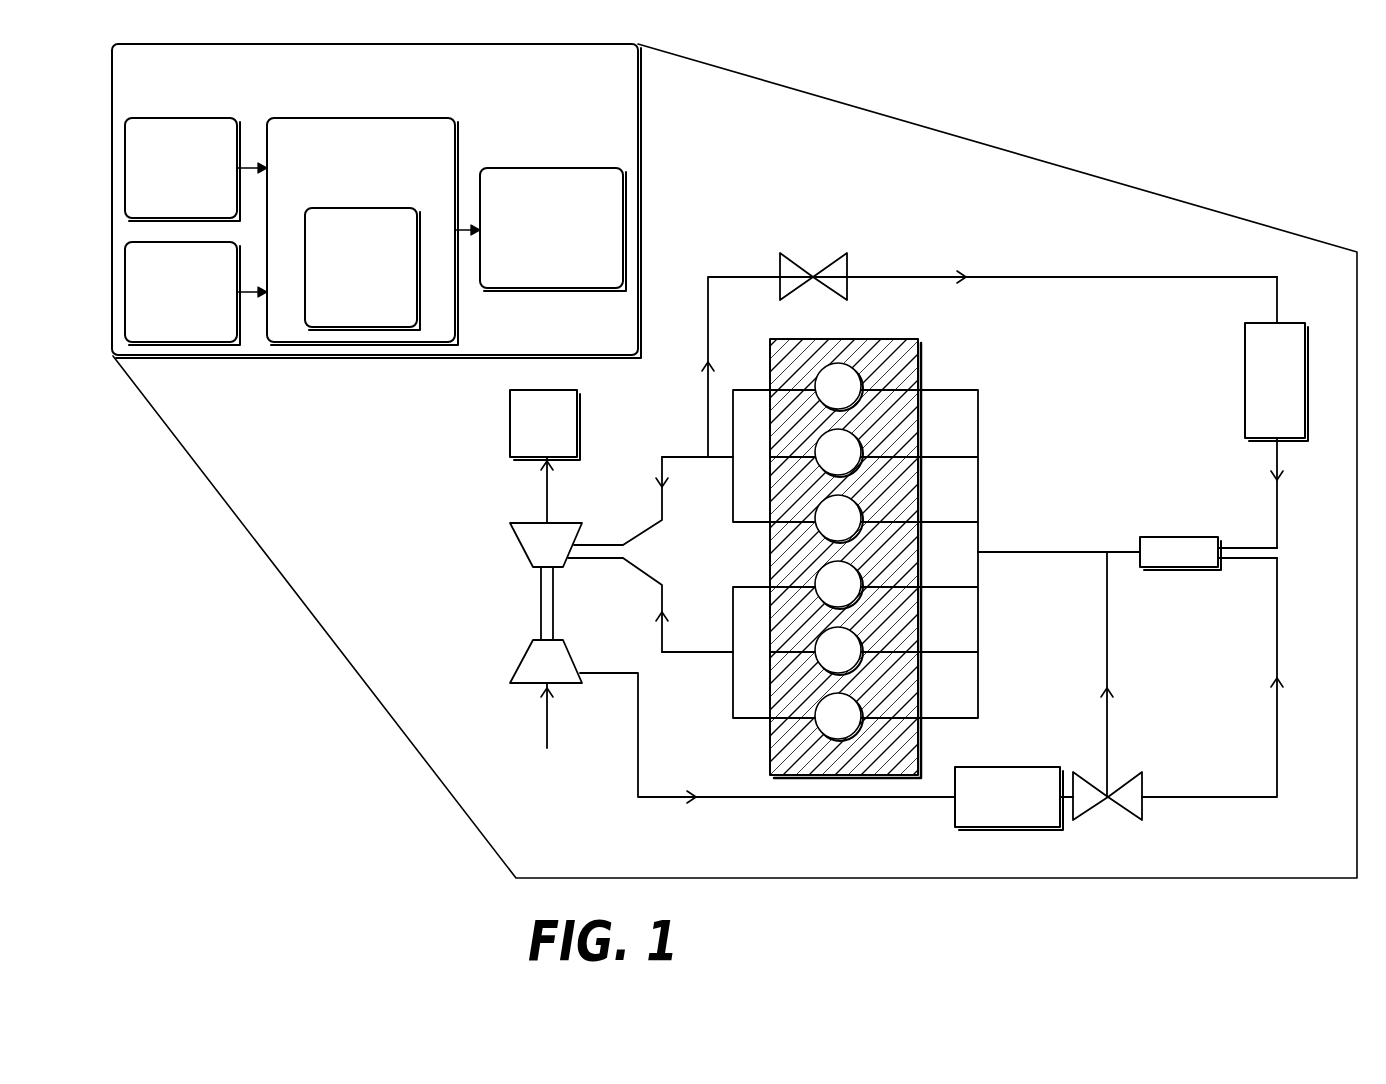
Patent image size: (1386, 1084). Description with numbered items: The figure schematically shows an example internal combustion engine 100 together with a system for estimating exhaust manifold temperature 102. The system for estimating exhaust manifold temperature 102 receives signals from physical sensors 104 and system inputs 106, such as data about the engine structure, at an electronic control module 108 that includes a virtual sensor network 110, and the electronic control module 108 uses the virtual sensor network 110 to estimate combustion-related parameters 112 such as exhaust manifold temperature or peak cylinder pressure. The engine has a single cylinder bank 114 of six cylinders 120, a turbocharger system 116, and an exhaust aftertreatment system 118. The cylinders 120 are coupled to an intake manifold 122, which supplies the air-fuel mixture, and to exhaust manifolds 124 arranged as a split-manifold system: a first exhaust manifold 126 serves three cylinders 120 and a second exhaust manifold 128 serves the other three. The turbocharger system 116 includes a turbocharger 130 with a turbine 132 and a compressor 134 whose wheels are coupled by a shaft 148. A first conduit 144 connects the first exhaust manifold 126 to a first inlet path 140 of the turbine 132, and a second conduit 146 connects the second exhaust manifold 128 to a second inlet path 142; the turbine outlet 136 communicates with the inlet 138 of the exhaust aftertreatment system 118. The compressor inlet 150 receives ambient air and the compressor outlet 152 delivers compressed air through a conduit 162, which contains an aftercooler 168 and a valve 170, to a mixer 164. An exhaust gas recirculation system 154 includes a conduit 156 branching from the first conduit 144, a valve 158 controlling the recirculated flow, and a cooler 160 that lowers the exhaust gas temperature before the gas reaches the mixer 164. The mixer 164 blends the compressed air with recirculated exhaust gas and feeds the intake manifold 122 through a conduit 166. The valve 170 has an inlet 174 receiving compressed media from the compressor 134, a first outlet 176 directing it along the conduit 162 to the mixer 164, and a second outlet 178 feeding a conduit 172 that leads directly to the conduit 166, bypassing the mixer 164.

The internal combustion engine 100 is at (720, 239).
The system for estimating exhaust manifold temperature 102 is at (454, 110).
The physical sensors 104 is at (197, 206).
The system inputs 106 is at (197, 329).
The electronic control module 108 is at (406, 199).
The virtual sensor network 110 is at (377, 314).
The combustion-related parameters 112 is at (567, 281).
The cylinder bank 114 is at (931, 348).
The turbocharger system 116 is at (525, 753).
The exhaust aftertreatment system 118 is at (510, 412).
The cylinders 120 is at (851, 399).
The intake manifold 122 is at (978, 490).
The exhaust manifolds 124 is at (694, 553).
The first exhaust manifold 126 is at (733, 503).
The second exhaust manifold 128 is at (733, 672).
The turbocharger 130 is at (511, 603).
The turbine 132 is at (520, 546).
The compressor 134 is at (520, 665).
The turbine outlet 136 is at (545, 520).
The inlet 138 is at (545, 462).
The first inlet path 140 is at (588, 538).
The second inlet path 142 is at (572, 562).
The first conduit 144 is at (662, 468).
The second conduit 146 is at (678, 652).
The shaft 148 is at (553, 632).
The compressor inlet 150 is at (538, 688).
The compressor outlet 152 is at (585, 676).
The exhaust gas recirculation system 154 is at (1135, 247).
The conduit 156 is at (708, 315).
The valve 158 is at (835, 258).
The cooler 160 is at (1305, 387).
The conduit 162 is at (1277, 615).
The mixer 164 is at (1178, 537).
The conduit 166 is at (1060, 552).
The aftercooler 168 is at (1032, 828).
The valve 170 is at (1135, 802).
The conduit 172 is at (1107, 633).
The inlet 174 is at (1068, 800).
The first outlet 176 is at (1145, 790).
The second outlet 178 is at (1105, 790).